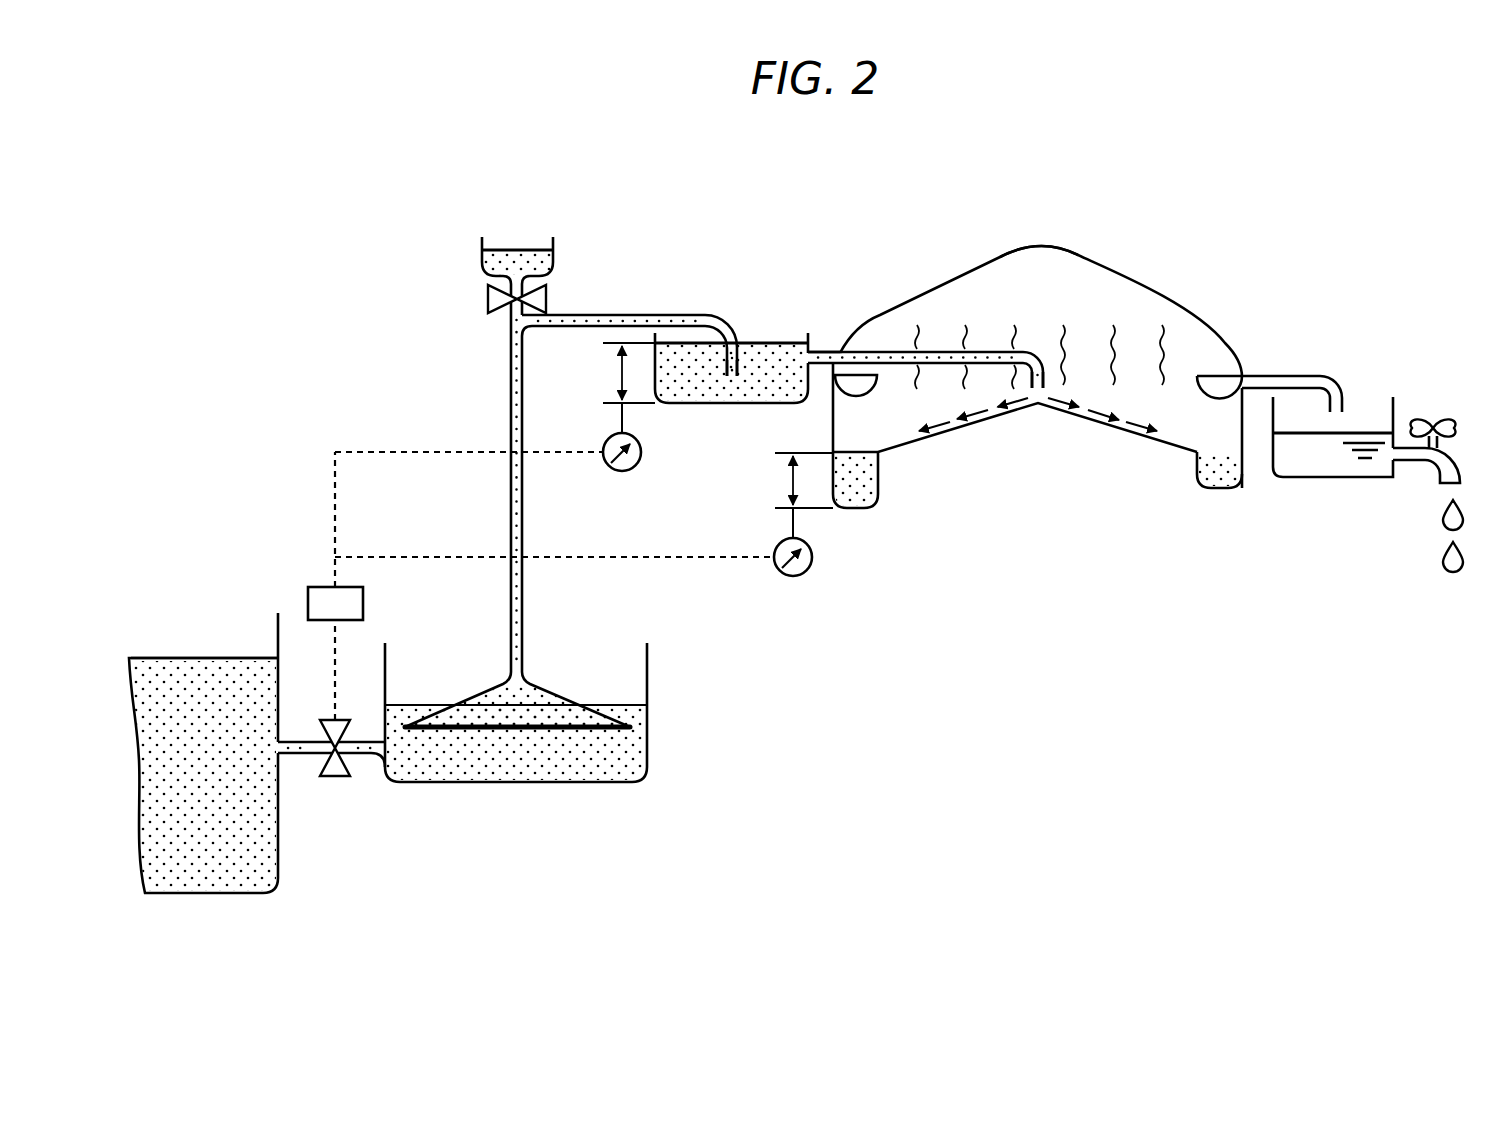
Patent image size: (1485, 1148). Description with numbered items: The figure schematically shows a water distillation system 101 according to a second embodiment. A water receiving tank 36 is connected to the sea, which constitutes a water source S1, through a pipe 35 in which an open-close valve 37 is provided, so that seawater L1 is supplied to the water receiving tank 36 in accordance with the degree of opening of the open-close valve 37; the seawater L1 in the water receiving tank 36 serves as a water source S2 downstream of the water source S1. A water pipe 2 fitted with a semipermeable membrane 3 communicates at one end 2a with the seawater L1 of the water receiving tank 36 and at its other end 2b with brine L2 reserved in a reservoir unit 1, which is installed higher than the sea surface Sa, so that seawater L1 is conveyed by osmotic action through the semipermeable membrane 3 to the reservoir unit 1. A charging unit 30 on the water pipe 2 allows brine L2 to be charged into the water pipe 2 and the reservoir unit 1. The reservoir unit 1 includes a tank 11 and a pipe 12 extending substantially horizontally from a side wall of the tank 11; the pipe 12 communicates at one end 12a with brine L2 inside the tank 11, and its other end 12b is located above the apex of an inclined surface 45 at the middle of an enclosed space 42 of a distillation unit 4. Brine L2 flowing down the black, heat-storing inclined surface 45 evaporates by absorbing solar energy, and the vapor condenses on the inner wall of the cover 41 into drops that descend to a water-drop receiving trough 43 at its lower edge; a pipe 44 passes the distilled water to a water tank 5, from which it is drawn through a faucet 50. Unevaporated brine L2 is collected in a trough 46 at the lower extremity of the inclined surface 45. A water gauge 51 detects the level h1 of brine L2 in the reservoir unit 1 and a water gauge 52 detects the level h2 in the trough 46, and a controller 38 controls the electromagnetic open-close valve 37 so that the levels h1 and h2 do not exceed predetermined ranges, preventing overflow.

The water distillation system 101 is at (1268, 206).
The charging unit 30 is at (466, 242).
The water pipe 2 is at (507, 395).
The one end of water pipe 2a is at (563, 697).
The other end of water pipe 2b is at (741, 365).
The reservoir unit 1 is at (722, 408).
The tank 11 is at (691, 405).
The pipe 12 is at (893, 352).
The one end of pipe 12a is at (832, 352).
The other end of pipe 12b is at (1047, 372).
The semipermeable membrane 3 is at (475, 730).
The pipe 35 is at (375, 757).
The water receiving tank 36 is at (648, 742).
The open-close valve 37 is at (336, 778).
The controller 38 is at (320, 585).
The distillation unit 4 is at (1203, 295).
The cover 41 is at (1122, 276).
The enclosed space 42 is at (1016, 268).
The water-drop receiving trough 43 is at (868, 398).
The pipe 44 is at (1293, 375).
The inclined surface 45 is at (1162, 438).
The trough 46 is at (1195, 468).
The water tank 5 is at (1364, 480).
The faucet 50 is at (1436, 424).
The water gauge 51 is at (623, 472).
The water gauge 52 is at (812, 562).
The water source S1 is at (211, 654).
The water source S2 is at (599, 704).
The sea surface Sa is at (253, 655).
The seawater L1 is at (241, 880).
The brine L2 is at (758, 393).
The level h1 is at (619, 373).
The level h2 is at (818, 435).